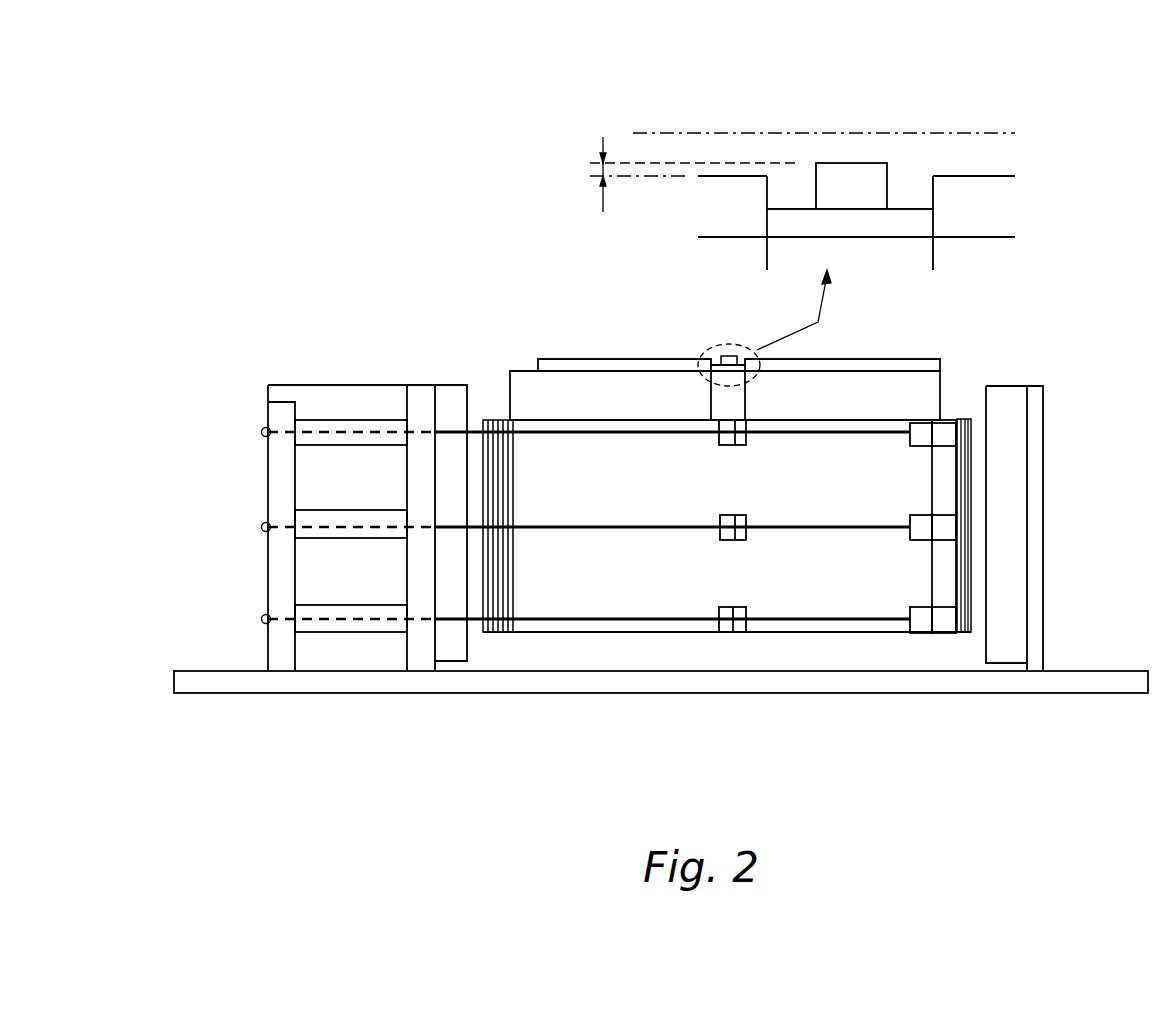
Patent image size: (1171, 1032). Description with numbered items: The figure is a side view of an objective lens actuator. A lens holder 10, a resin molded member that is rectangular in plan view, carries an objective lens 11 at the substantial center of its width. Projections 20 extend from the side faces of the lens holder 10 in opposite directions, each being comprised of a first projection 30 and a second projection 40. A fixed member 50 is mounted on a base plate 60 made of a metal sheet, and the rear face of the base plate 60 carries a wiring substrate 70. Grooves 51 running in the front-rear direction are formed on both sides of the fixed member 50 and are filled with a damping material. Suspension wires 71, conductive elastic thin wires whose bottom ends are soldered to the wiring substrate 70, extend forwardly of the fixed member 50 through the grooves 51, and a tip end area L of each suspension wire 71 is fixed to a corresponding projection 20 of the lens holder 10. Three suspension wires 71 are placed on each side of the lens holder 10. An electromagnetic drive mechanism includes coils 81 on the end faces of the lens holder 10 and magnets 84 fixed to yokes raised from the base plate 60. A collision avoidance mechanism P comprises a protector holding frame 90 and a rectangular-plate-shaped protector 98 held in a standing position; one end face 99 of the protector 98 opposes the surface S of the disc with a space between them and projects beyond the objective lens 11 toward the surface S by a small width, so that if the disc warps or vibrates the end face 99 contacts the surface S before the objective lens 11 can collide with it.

The lens holder 10 is at (668, 634).
The objective lens 11 is at (740, 175).
The projection 20 is at (672, 525).
The first projection 30 is at (913, 448).
The second projection 40 is at (725, 447).
The fixed member 50 is at (371, 384).
The groove 51 is at (304, 424).
The base plate 60 is at (212, 694).
The wiring substrate 70 is at (268, 482).
The suspension wire 71 is at (603, 437).
The coil 81 is at (497, 634).
The magnet 84 is at (450, 385).
The protector holding frame 90 is at (918, 225).
The protector 98 is at (890, 180).
The one end face 99 is at (837, 162).
The surface of the disc S is at (698, 137).
The collision avoidance mechanism P is at (723, 334).
The tip end area L is at (807, 437).